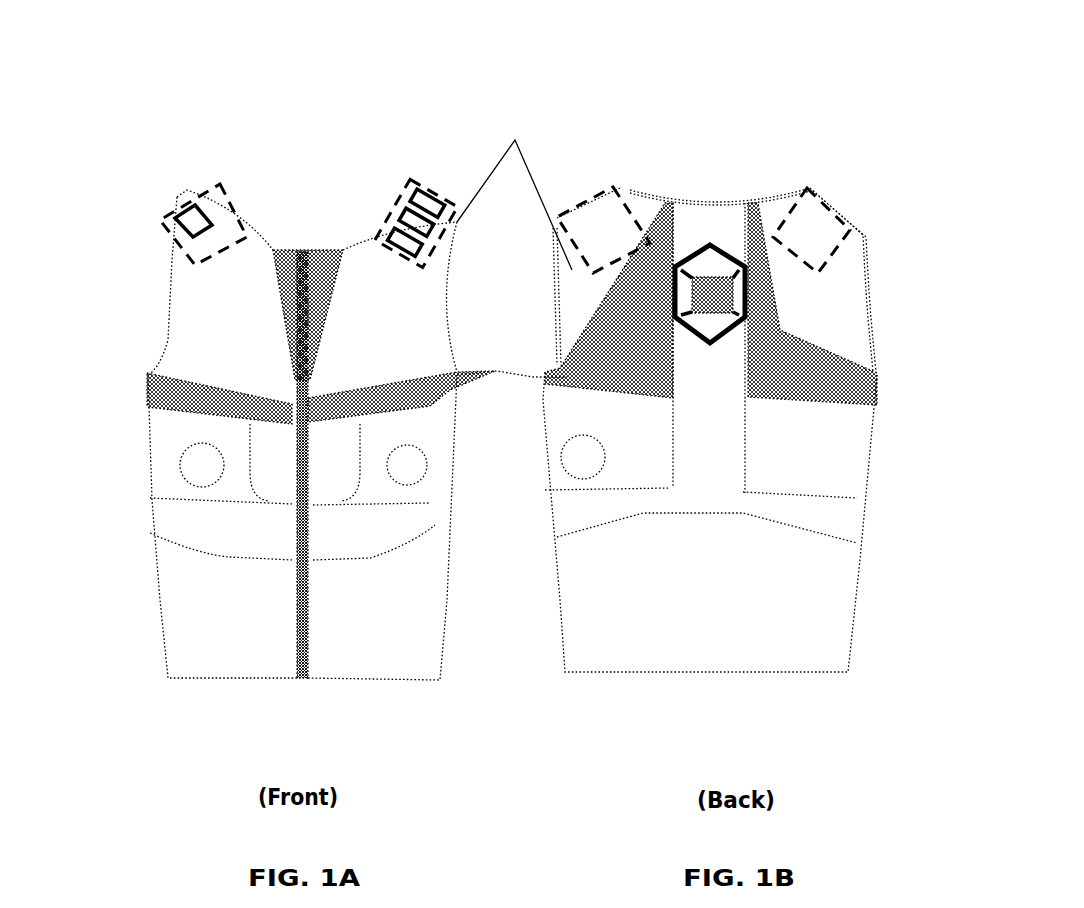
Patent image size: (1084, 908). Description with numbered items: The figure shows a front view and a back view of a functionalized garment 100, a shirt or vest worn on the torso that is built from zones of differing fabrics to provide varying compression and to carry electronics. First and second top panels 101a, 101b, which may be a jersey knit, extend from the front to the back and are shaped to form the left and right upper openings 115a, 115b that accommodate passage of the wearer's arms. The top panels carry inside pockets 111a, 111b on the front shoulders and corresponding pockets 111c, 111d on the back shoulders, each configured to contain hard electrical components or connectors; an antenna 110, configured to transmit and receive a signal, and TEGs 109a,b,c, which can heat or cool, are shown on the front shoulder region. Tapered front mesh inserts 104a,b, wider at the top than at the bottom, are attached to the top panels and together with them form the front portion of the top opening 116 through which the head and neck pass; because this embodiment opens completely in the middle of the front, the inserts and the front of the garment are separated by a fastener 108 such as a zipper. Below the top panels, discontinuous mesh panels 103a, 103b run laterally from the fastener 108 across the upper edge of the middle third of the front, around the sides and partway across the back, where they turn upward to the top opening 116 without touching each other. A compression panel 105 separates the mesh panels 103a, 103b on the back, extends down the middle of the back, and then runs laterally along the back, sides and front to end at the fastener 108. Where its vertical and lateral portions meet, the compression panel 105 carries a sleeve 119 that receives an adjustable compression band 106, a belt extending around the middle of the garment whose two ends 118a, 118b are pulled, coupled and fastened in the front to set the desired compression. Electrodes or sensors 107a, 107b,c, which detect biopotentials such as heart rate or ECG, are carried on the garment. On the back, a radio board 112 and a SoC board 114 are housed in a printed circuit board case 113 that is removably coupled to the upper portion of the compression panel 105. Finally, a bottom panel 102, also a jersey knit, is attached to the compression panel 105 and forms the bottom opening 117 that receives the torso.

In FIG. 1A, the functionalized garment 100 is at (188, 50).
In FIG. 1B, the functionalized garment 100 is at (823, 58).
In FIG. 1A, the first top panel 101a is at (515, 142).
In FIG. 1A, the second top panel 101b is at (185, 282).
In FIG. 1B, the second top panel 101b is at (840, 257).
In FIG. 1A, the bottom panel 102 is at (222, 607).
In FIG. 1A, the mesh panel 103a is at (418, 379).
In FIG. 1A, the mesh panel 103b is at (167, 382).
In FIG. 1B, the mesh panel 103b is at (837, 383).
In FIG. 1A, the front mesh inserts 104a,b is at (327, 257).
In FIG. 1A, the compression panel 105 is at (167, 408).
In FIG. 1B, the compression panel 105 is at (810, 402).
In FIG. 1A, the adjustable compression band 106 is at (167, 488).
In FIG. 1B, the adjustable compression band 106 is at (840, 487).
In FIG. 1A, the electrode / sensor 107a is at (190, 465).
In FIG. 1A, the electrodes / sensors 107b,c is at (428, 469).
In FIG. 1B, the electrodes / sensors 107b,c is at (577, 462).
In FIG. 1A, the fastener 108 is at (305, 680).
In FIG. 1A, the TEGs 109a,b,c is at (436, 206).
In FIG. 1A, the antenna 110 is at (190, 220).
In FIG. 1A, the pocket 111a is at (218, 186).
In FIG. 1A, the pocket 111b is at (383, 228).
In FIG. 1B, the pocket 111c is at (605, 200).
In FIG. 1B, the pocket 111d is at (813, 227).
In FIG. 1B, the radio board 112 is at (713, 283).
In FIG. 1B, the printed circuit board case 113 is at (727, 257).
In FIG. 1B, the SoC board 114 is at (693, 280).
In FIG. 1A, the upper opening (arm opening) 115a is at (158, 316).
In FIG. 1B, the upper opening (arm opening) 115a is at (870, 312).
In FIG. 1A, the upper opening (arm opening) 115b is at (538, 322).
In FIG. 1A, the top opening 116 is at (300, 157).
In FIG. 1B, the top opening 116 is at (768, 183).
In FIG. 1A, the bottom opening 117 is at (233, 697).
In FIG. 1B, the bottom opening 117 is at (703, 688).
In FIG. 1A, the end of adjustable compression band 118a is at (287, 502).
In FIG. 1A, the end of adjustable compression band 118b is at (325, 502).
In FIG. 1B, the sleeve 119 is at (707, 450).